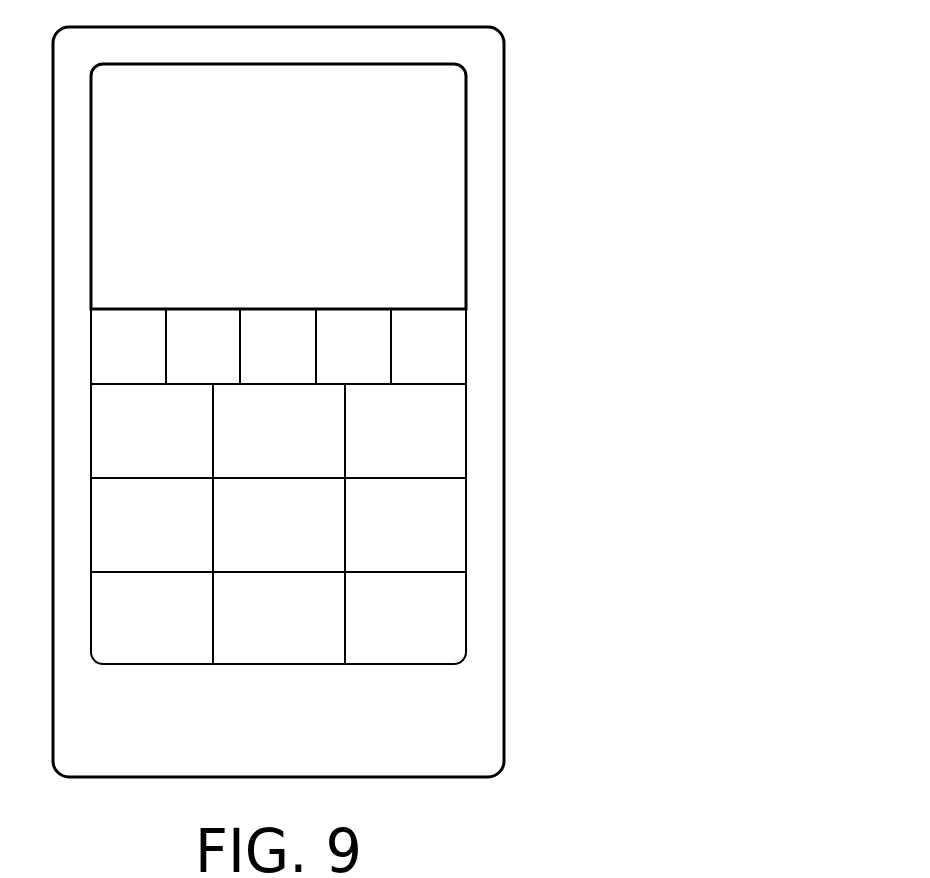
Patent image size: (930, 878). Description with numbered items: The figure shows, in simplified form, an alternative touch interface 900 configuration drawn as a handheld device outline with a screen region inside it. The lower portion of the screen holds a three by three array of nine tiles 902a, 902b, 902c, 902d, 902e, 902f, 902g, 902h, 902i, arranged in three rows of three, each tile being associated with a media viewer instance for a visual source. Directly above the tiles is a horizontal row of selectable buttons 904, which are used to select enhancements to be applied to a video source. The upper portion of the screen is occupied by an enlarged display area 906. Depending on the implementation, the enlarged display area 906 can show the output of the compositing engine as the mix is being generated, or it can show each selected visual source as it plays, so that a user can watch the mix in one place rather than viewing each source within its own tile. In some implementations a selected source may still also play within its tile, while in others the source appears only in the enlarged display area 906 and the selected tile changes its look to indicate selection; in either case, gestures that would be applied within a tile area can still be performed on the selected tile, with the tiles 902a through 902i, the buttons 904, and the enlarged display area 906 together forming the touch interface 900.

The touch interface 900 is at (467, 251).
The enlarged display area 906 is at (298, 197).
The selectable buttons 904 is at (148, 358).
The tile 902a is at (178, 442).
The tile 902b is at (305, 442).
The tile 902c is at (432, 442).
The tile 902d is at (178, 535).
The tile 902e is at (305, 535).
The tile 902f is at (431, 535).
The tile 902g is at (178, 629).
The tile 902h is at (305, 629).
The tile 902i is at (429, 629).